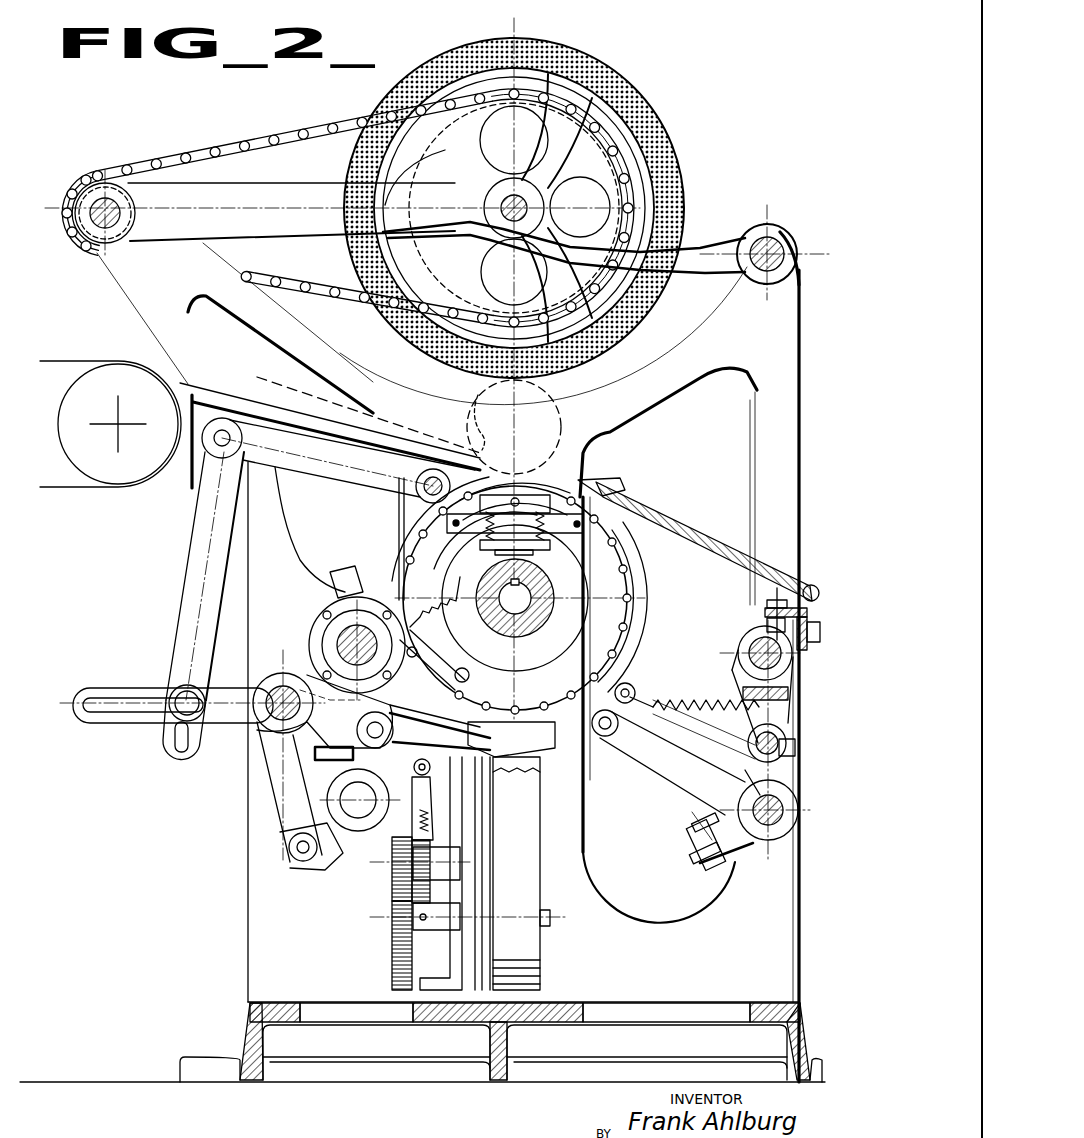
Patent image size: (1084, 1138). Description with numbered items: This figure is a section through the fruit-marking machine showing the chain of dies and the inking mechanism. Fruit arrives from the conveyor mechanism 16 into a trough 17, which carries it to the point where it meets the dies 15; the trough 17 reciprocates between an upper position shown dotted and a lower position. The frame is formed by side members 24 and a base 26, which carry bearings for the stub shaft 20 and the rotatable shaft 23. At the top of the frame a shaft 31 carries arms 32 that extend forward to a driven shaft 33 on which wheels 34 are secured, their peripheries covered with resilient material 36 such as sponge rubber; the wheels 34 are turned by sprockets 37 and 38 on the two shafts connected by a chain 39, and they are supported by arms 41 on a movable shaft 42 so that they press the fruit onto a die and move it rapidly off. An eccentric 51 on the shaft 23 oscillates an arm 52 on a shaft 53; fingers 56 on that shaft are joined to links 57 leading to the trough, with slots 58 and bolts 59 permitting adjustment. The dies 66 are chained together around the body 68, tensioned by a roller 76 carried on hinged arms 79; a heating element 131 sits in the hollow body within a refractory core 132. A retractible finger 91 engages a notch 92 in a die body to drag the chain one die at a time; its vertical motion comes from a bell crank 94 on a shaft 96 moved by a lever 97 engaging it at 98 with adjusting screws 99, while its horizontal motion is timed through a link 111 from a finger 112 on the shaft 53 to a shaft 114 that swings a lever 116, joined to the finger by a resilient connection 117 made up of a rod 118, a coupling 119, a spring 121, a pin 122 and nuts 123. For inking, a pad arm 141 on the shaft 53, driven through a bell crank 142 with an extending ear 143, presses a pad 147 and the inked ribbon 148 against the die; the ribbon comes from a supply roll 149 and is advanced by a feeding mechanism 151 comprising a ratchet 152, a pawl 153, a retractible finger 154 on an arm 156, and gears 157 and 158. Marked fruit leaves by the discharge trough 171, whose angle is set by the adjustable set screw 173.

The dies 15 is at (572, 418).
The conveyor mechanism 16 is at (70, 358).
The trough 17 is at (314, 466).
The stub shaft 20 is at (340, 806).
The rotatable shaft 23 is at (337, 645).
The side members 24 is at (248, 934).
The base 26 is at (250, 1010).
The shaft 31 is at (122, 202).
The arms 32 is at (232, 198).
The driven shaft 33 is at (528, 204).
The wheels 34 is at (648, 154).
The resilient material 36 is at (640, 122).
The sprocket 37 is at (96, 180).
The sprocket 38 is at (466, 170).
The chain 39 is at (234, 152).
The arms 41 is at (690, 248).
The movable shaft 42 is at (758, 242).
The eccentric 51 is at (365, 592).
The arm 52 is at (300, 742).
The shaft 53 is at (268, 688).
The fingers 56 is at (132, 688).
The links 57 is at (186, 590).
The slots 58 is at (176, 748).
The bolts 59 is at (206, 700).
The dies 66 is at (512, 482).
The body or shaft 68 is at (460, 545).
The roller 76 is at (436, 612).
The hinged arms 79 is at (445, 646).
The retractible finger 91 is at (650, 596).
The notch 92 is at (645, 572).
The bell crank 94 is at (648, 762).
The shaft 96 is at (774, 845).
The lever 97 is at (706, 868).
The engagement 98 is at (698, 855).
The screws 99 is at (690, 826).
The link 111 is at (330, 825).
The finger 112 is at (270, 790).
The shaft 114 is at (756, 642).
The lever 116 is at (745, 678).
The resilient connection 117 is at (660, 698).
The rod 118 is at (690, 728).
The coupling 119 is at (620, 720).
The spring 121 is at (720, 750).
The pin 122 is at (760, 732).
The nuts 123 is at (745, 780).
The heating element 131 is at (506, 630).
The refractory core 132 is at (530, 620).
The pad arm 141 is at (434, 690).
The bell crank 142 is at (322, 650).
The extending ear 143 is at (315, 755).
The pad 147 is at (500, 716).
The inked ribbon 148 is at (545, 790).
The supply roll 149 is at (528, 952).
The feeding mechanism 151 is at (413, 917).
The ratchet 152 is at (392, 890).
The pawl 153 is at (412, 825).
The retractible finger 154 is at (418, 776).
The arm 156 is at (388, 750).
The gear 157 is at (400, 850).
The gear 158 is at (392, 960).
The discharge trough 171 is at (676, 536).
The adjustable set screw 173 is at (766, 603).